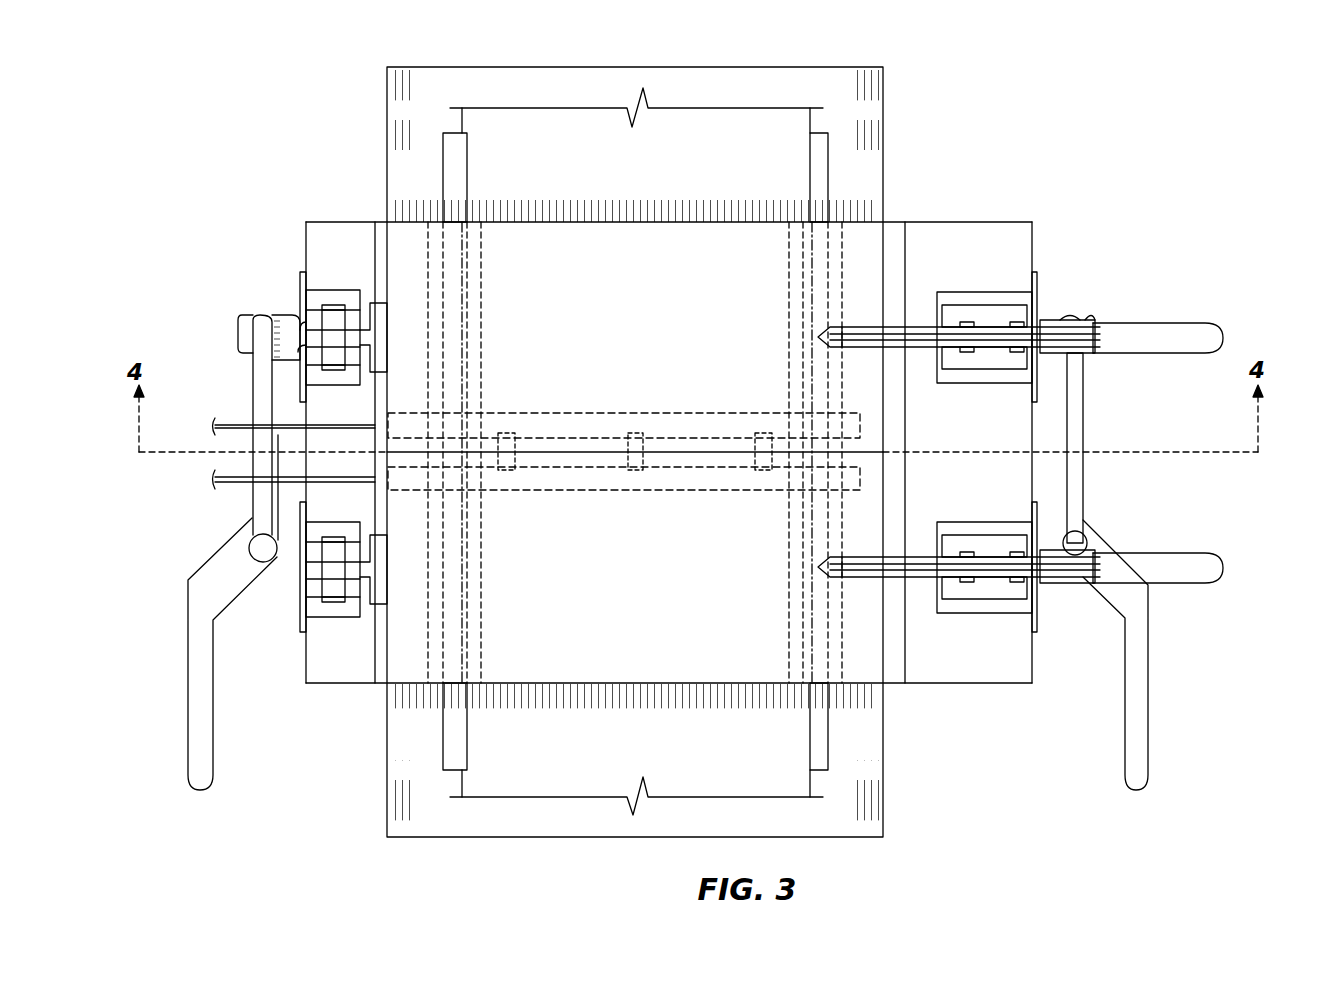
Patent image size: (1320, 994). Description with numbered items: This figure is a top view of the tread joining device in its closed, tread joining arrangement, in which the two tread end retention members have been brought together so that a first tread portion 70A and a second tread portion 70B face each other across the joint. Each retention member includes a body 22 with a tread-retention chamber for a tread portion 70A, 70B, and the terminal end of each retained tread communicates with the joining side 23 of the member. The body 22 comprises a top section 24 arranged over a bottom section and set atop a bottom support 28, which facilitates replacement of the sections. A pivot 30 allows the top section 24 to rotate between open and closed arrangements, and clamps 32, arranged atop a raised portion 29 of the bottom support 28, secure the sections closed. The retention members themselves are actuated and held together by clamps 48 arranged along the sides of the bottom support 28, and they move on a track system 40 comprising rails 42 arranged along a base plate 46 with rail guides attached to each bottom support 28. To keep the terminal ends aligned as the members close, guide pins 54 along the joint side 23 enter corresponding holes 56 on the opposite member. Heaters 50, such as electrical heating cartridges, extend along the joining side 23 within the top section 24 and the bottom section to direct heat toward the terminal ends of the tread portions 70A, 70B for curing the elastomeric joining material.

The body 22 is at (862, 222).
The joining side 23 is at (568, 455).
The top section 24 is at (629, 442).
The bottom support 28 is at (340, 240).
The raised portion 29 is at (1020, 240).
The pivot 30 is at (340, 335).
The clamp 32 is at (1210, 325).
The track system 40 is at (442, 848).
The rail 42 is at (443, 743).
The base plate 46 is at (883, 805).
The clamp 48 is at (222, 547).
The heater 50 is at (410, 413).
The guide pin 54 is at (505, 440).
The hole 56 is at (637, 433).
The first tread portion 70A is at (636, 128).
The second tread portion 70B is at (636, 771).